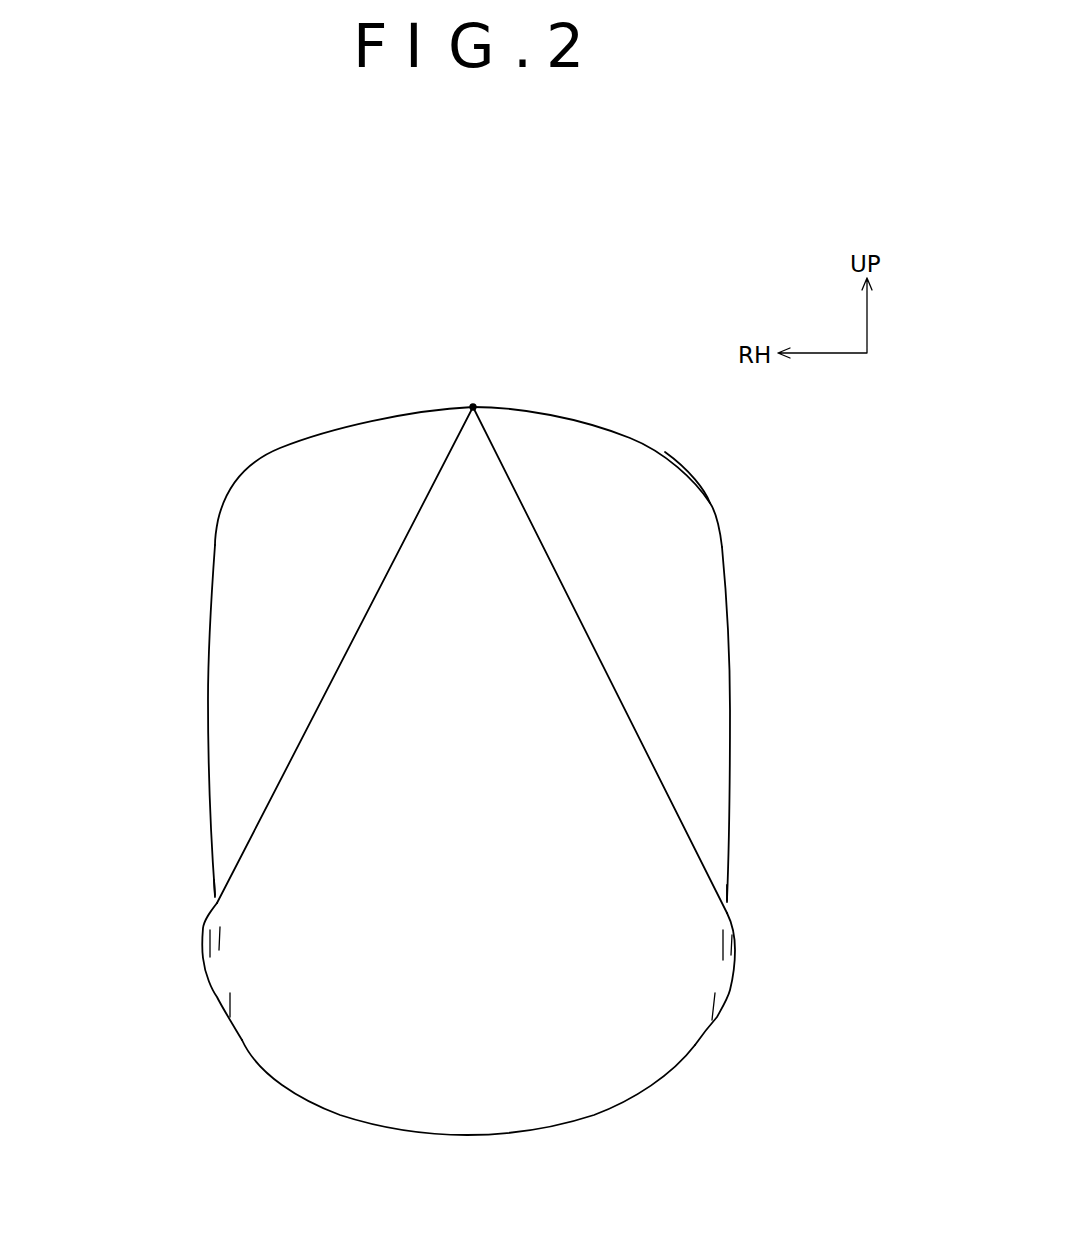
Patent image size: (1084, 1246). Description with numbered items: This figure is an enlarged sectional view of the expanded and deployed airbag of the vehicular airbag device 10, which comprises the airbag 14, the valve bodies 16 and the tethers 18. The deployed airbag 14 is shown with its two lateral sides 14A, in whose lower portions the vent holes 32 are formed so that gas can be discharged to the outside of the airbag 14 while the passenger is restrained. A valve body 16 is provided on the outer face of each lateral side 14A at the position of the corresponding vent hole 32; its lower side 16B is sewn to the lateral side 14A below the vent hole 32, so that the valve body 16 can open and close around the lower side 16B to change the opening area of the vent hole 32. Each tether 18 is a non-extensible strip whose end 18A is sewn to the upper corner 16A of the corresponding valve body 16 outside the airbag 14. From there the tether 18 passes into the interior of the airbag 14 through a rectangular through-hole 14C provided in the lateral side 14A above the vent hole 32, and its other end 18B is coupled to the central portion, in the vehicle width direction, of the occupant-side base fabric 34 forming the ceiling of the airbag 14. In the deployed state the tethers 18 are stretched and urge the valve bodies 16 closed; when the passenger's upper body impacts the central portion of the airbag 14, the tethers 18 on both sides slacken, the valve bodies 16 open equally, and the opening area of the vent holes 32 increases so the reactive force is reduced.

The vehicular airbag device 10 is at (809, 469).
The airbag 14 is at (720, 490).
The lateral sides 14A is at (210, 835).
The through-holes 14C is at (213, 896).
The valve bodies 16 is at (205, 1004).
The upper corner 16A is at (205, 928).
The lower side 16B is at (230, 1019).
The tethers 18 is at (337, 653).
The end 18A is at (203, 960).
The other end 18B is at (473, 410).
The vent holes 32 is at (230, 969).
The occupant-side base fabric 34 is at (610, 428).